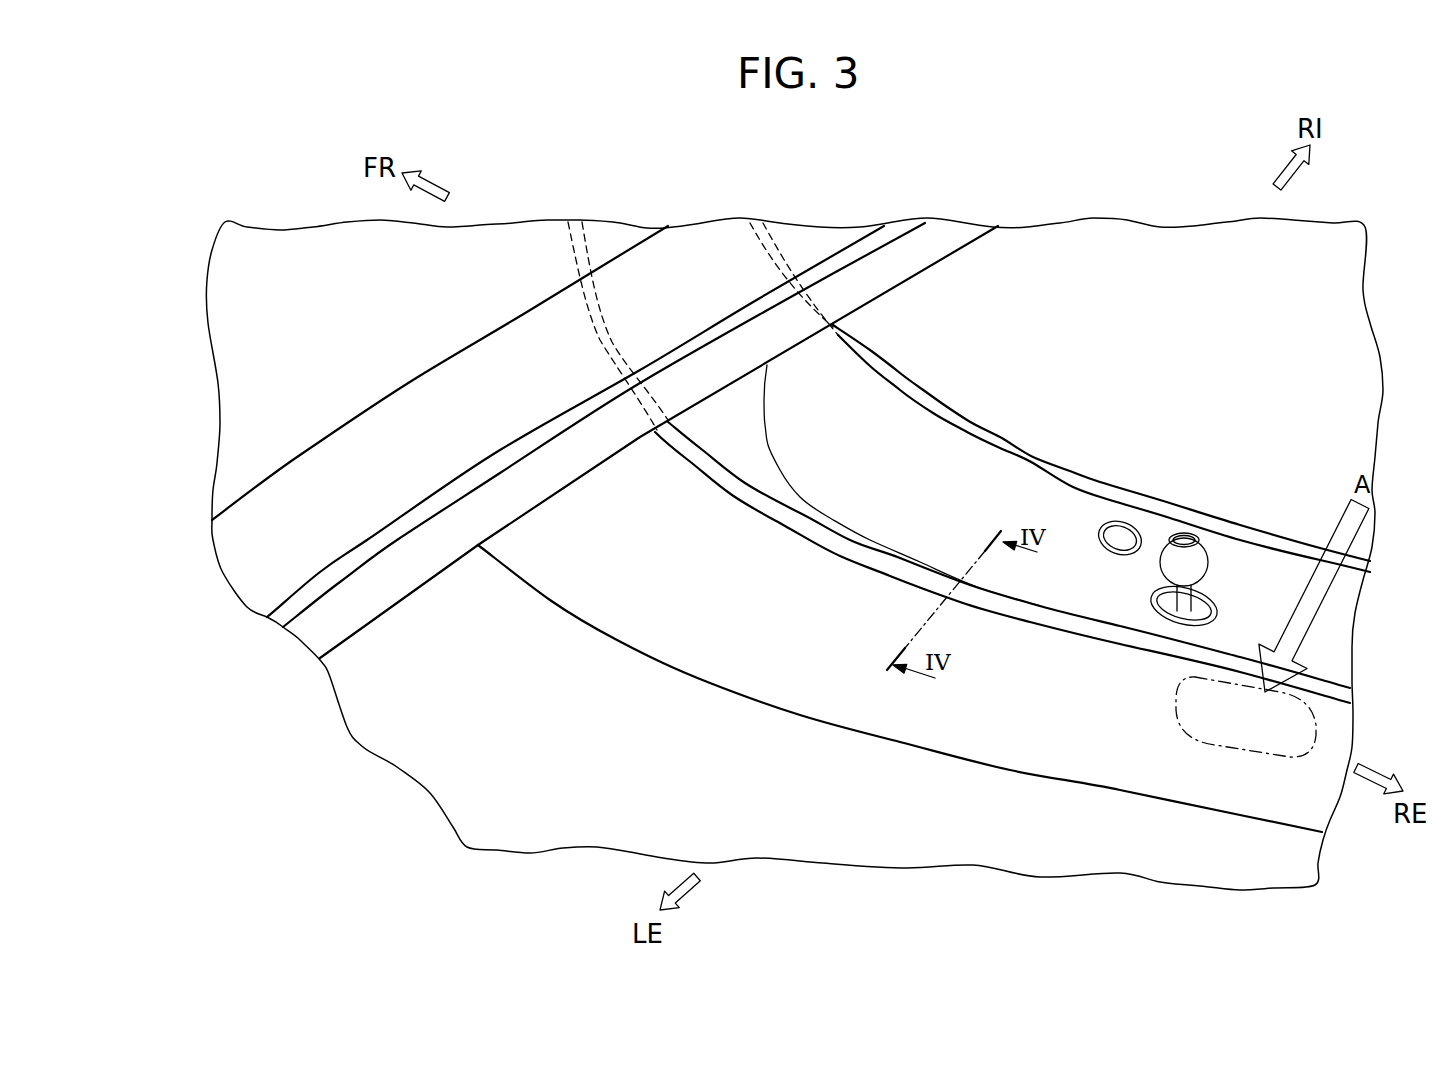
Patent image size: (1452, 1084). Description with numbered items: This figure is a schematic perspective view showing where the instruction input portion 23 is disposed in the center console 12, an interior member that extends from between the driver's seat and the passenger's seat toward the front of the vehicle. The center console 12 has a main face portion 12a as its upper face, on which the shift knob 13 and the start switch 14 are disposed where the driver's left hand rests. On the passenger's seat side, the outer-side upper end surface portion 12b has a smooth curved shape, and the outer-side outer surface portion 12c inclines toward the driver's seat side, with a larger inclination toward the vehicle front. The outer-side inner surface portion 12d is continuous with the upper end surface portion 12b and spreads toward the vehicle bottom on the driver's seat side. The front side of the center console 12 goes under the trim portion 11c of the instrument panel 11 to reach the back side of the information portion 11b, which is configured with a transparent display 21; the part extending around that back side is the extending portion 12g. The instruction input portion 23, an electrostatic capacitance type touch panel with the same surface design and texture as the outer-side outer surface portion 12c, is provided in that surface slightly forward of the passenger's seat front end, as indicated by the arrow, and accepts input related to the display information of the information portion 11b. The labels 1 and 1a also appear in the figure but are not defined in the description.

The vehicle interior / instrument panel assembly 1 is at (892, 205).
The upper surface of instrument panel 1a is at (1290, 284).
The instrument panel 11 is at (270, 408).
The information portion 11b is at (617, 237).
The trim portion 11c is at (335, 488).
The center console 12 is at (940, 445).
The main face portion 12a is at (1084, 570).
The outer-side upper end surface portion 12b is at (750, 512).
The outer-side outer surface portion 12c is at (1000, 682).
The outer-side inner surface portion 12d is at (748, 433).
The extending portion 12g is at (568, 248).
The shift knob 13 is at (1210, 556).
The start switch 14 is at (1133, 530).
The transparent display 21 is at (596, 382).
The instruction input portion 23 is at (1222, 722).